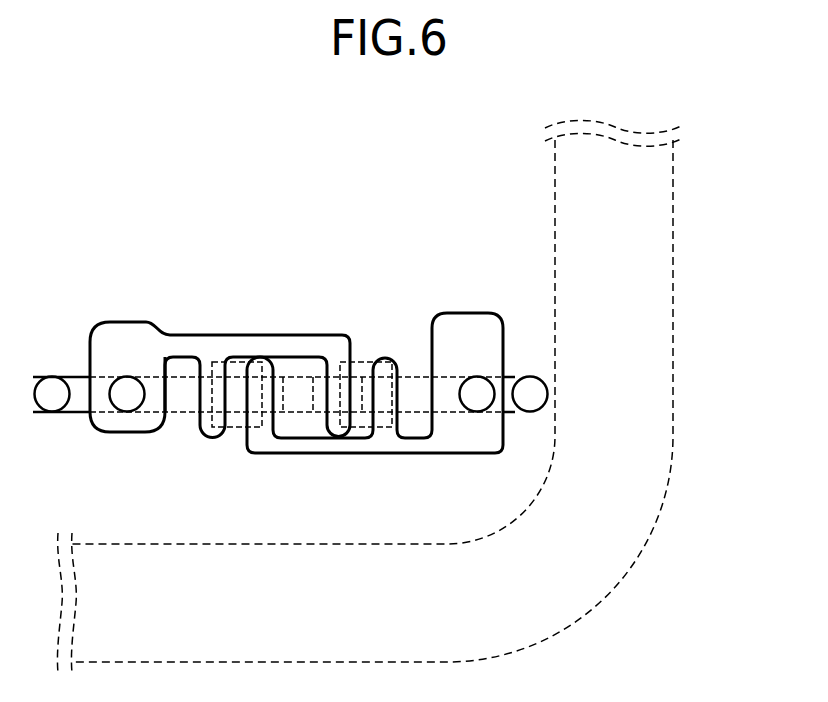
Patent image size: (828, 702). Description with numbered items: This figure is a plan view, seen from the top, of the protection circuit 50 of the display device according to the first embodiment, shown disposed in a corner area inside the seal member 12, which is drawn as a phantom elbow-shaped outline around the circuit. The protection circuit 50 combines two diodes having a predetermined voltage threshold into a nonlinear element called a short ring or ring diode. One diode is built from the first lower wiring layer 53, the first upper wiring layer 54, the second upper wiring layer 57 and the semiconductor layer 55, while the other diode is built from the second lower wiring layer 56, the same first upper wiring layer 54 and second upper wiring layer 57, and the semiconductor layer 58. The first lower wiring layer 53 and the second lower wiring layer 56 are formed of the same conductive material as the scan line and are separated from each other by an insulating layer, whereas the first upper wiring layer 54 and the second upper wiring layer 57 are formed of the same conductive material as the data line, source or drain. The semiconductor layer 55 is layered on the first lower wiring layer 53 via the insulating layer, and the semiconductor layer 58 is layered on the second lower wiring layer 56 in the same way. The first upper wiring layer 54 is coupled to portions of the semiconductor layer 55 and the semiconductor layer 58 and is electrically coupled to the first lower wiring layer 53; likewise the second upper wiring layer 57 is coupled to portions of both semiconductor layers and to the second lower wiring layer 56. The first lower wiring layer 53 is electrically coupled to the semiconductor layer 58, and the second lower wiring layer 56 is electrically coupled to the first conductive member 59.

The seal member 12 is at (606, 553).
The protection circuit 50 is at (157, 277).
The first lower wiring layer 53 is at (183, 397).
The first upper wiring layer 54 is at (283, 352).
The semiconductor layer 55 is at (237, 370).
The second lower wiring layer 56 is at (421, 392).
The second upper wiring layer 57 is at (328, 445).
The semiconductor layer 58 is at (42, 377).
The first conductive member 59 is at (538, 374).